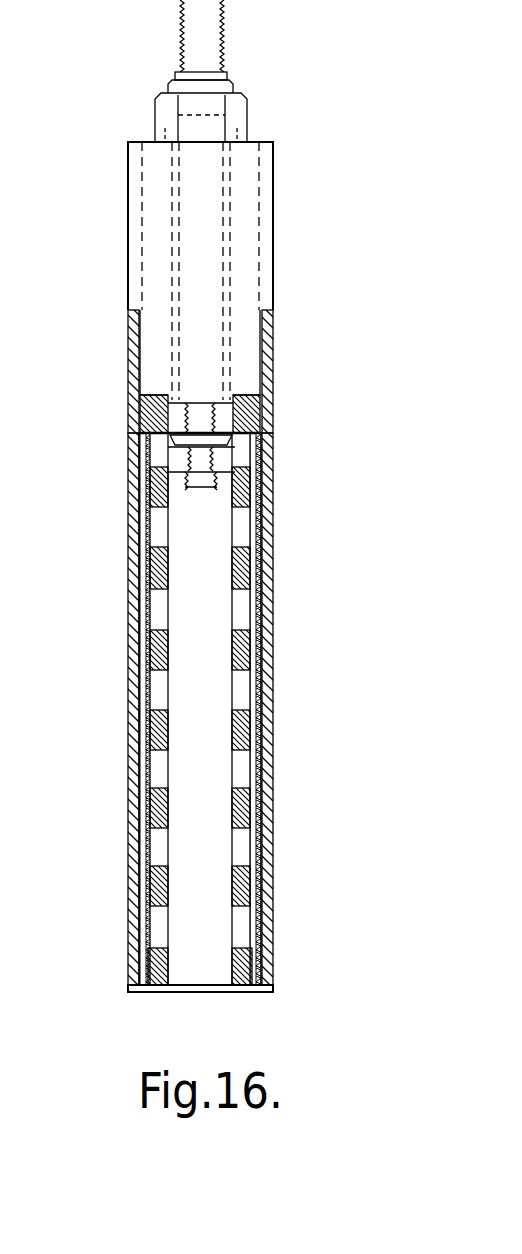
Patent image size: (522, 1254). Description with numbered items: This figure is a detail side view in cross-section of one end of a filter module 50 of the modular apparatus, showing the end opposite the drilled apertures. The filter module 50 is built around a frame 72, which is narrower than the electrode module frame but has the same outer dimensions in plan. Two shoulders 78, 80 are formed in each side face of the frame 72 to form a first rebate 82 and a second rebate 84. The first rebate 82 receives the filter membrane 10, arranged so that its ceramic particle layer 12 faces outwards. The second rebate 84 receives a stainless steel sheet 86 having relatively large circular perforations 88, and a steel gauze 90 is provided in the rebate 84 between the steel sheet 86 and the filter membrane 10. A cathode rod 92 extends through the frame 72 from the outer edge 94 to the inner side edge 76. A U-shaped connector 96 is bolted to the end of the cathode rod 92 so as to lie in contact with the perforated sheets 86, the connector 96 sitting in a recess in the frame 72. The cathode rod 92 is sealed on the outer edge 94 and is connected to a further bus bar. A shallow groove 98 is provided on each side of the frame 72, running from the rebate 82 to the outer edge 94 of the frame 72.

The filter membrane 10 is at (272, 968).
The ceramic particle layer 12 is at (272, 910).
The filter module 50 is at (128, 352).
The frame 72 is at (253, 218).
The inner side edge 76 is at (142, 498).
The shoulder 78 is at (270, 313).
The shoulder 80 is at (270, 390).
The first rebate 82 is at (137, 388).
The second rebate 84 is at (150, 446).
The stainless steel sheet 86 is at (155, 993).
The circular perforations 88 is at (158, 923).
The steel gauze 90 is at (258, 993).
The cathode rod 92 is at (203, 48).
The outer edge 94 is at (150, 140).
The U-shaped connector 96 is at (270, 433).
The shallow groove 98 is at (140, 277).